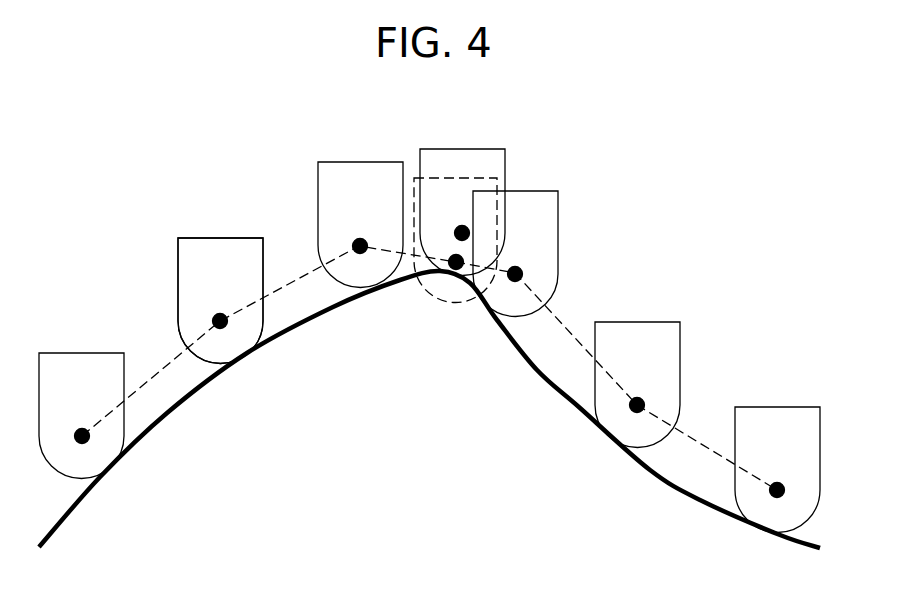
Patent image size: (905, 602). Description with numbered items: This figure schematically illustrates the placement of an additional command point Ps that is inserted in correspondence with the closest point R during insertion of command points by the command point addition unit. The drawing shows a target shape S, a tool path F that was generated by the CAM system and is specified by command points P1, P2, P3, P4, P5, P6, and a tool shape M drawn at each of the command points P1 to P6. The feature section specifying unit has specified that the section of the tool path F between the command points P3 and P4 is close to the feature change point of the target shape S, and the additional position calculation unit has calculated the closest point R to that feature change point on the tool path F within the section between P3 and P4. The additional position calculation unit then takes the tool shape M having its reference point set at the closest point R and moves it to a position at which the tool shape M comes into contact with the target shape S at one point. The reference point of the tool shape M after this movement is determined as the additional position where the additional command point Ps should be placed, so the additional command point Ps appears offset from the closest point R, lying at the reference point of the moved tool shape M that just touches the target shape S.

The target shape S is at (568, 405).
The tool path F is at (705, 437).
The tool shape M is at (193, 238).
The command point P1 is at (82, 436).
The command point P2 is at (220, 321).
The command point P3 is at (360, 246).
The command point P4 is at (515, 274).
The command point P5 is at (637, 405).
The command point P6 is at (777, 490).
The additional command point Ps is at (462, 233).
The closest point R is at (456, 262).